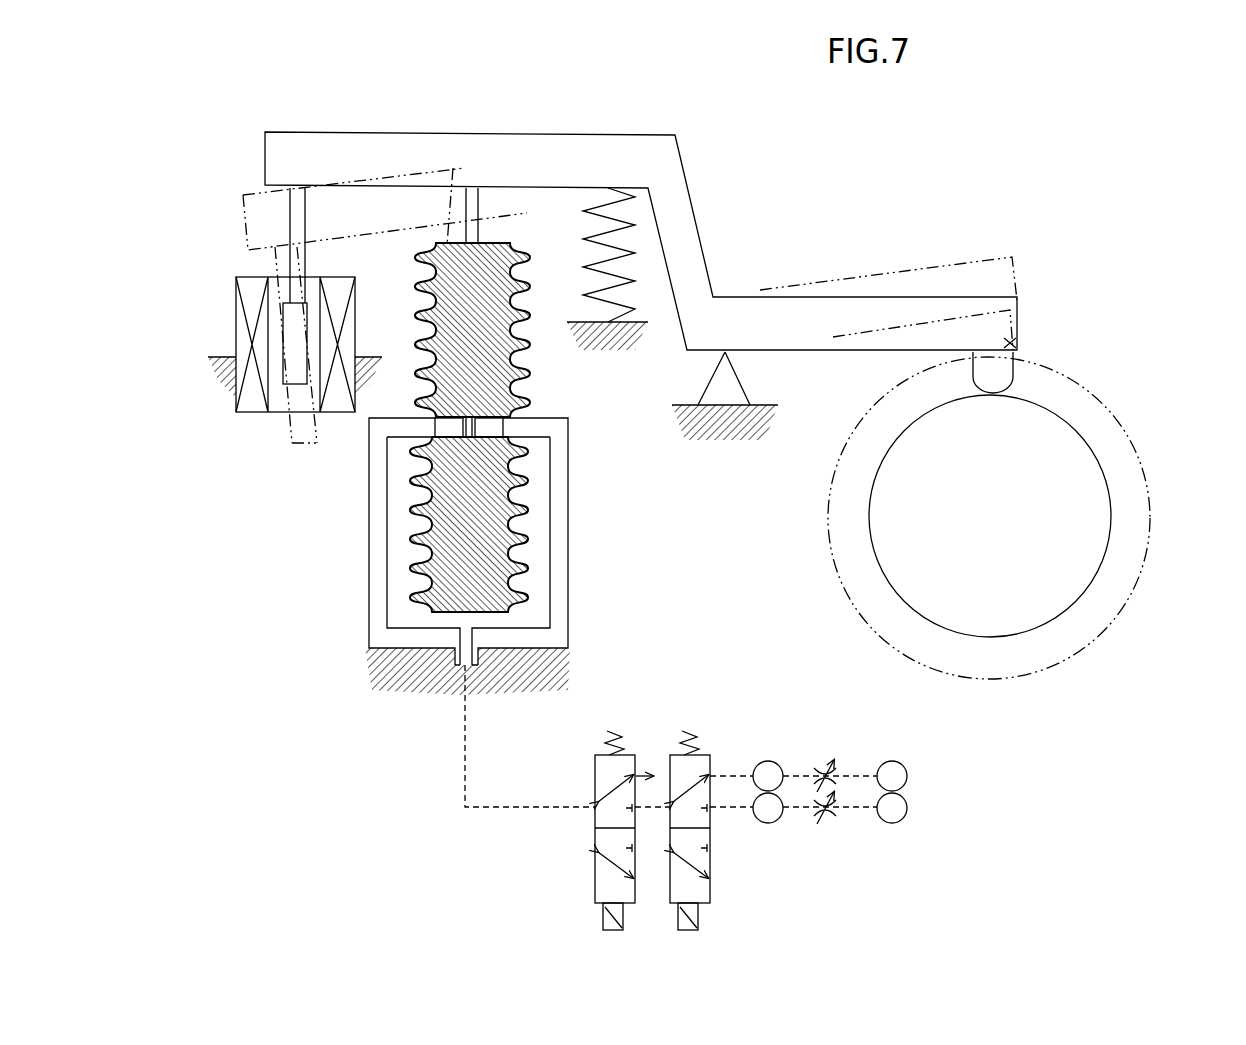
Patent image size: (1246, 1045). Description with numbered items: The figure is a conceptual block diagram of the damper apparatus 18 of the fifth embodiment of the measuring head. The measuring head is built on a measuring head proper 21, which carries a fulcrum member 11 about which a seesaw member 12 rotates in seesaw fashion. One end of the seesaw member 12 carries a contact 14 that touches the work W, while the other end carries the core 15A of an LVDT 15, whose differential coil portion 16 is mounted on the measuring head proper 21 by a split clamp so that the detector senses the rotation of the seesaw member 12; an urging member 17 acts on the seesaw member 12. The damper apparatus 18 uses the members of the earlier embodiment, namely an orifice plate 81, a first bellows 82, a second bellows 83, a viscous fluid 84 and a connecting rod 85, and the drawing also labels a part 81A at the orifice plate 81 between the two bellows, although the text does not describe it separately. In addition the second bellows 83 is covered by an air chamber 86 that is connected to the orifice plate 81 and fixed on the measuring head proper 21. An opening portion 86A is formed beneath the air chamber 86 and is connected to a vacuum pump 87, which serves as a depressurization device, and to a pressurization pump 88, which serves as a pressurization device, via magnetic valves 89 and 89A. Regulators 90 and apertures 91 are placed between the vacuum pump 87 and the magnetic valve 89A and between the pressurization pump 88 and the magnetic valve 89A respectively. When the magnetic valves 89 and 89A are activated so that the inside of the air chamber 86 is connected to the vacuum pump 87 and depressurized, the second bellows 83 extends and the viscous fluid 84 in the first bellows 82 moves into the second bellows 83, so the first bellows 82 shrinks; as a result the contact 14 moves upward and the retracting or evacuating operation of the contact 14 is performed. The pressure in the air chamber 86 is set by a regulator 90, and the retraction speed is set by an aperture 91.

The fulcrum member 11 is at (737, 387).
The seesaw member 12 is at (647, 148).
The contact 14 is at (1013, 370).
The LVDT 15 is at (256, 324).
The core 15A is at (292, 345).
The differential coil portion 16 is at (250, 397).
The urging member 17 is at (625, 252).
The damper apparatus 18 is at (437, 596).
The measuring head proper 21 is at (385, 690).
The orifice plate 81 is at (455, 430).
The connecting rod 81A is at (473, 448).
The first bellows 82 is at (533, 378).
The second bellows 83 is at (528, 607).
The viscous fluid 84 is at (493, 613).
The connecting rod 85 is at (473, 200).
The air chamber 86 is at (372, 560).
The opening portion 86A is at (460, 668).
The vacuum pump 87 is at (891, 760).
The pressurization pump 88 is at (888, 823).
The magnetic valve 89 is at (595, 778).
The magnetic valve 89A is at (670, 765).
The regulator 90 is at (768, 760).
The aperture 91 is at (822, 760).
The work W is at (1093, 522).